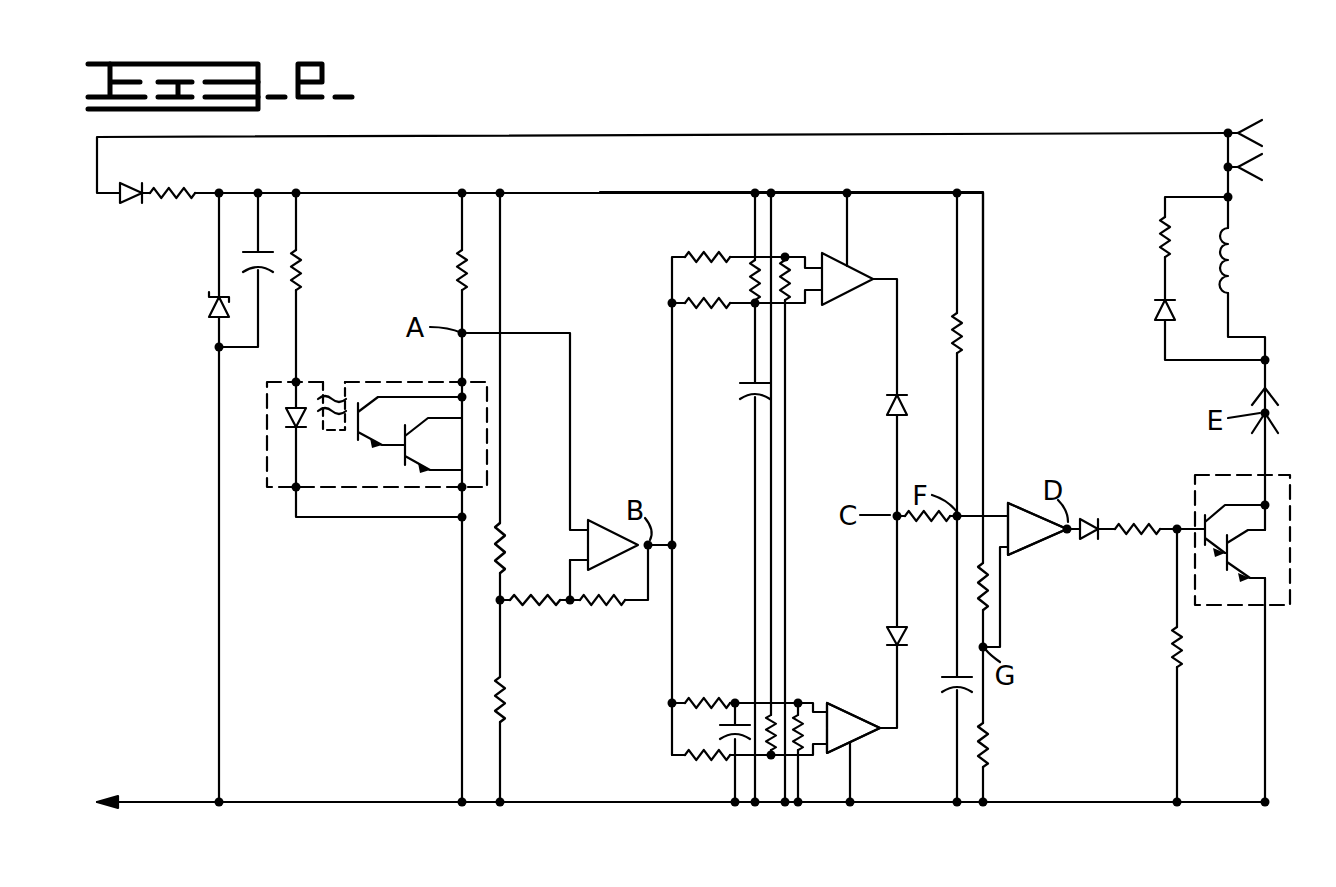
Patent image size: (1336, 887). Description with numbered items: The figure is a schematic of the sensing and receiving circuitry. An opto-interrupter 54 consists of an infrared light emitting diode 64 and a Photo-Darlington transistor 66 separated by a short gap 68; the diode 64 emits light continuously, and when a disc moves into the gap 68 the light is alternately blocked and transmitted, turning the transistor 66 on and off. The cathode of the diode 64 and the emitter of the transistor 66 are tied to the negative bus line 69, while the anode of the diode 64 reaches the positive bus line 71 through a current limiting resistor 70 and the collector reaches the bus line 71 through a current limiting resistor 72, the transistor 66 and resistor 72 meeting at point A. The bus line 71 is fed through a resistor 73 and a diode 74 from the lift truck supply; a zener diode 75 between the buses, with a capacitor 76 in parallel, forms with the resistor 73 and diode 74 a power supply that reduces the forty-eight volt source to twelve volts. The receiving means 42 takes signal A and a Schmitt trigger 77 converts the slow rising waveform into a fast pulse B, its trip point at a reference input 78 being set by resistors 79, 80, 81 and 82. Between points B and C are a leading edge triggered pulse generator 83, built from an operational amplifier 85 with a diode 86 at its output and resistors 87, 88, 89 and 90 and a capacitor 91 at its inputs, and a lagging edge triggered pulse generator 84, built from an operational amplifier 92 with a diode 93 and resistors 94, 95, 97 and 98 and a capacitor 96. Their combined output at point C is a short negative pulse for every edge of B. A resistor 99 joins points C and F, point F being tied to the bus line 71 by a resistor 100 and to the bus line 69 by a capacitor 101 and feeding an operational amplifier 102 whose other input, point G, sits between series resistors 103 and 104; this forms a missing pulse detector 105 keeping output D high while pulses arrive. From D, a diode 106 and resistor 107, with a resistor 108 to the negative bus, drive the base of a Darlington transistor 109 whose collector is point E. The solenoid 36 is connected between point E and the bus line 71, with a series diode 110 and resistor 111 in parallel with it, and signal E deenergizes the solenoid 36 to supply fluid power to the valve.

The solenoid 36 is at (1236, 270).
The receiving means 42 is at (968, 172).
The opto-interrupter 54 is at (270, 490).
The infrared light emitting diode 64 is at (285, 413).
The Photo-Darlington transistor 66 is at (360, 403).
The gap 68 is at (337, 378).
The negative bus line 69 is at (358, 800).
The current limiting resistor 70 is at (300, 275).
The positive bus line 71 is at (375, 197).
The current limiting resistor 72 is at (460, 270).
The resistor 73 is at (188, 190).
The diode 74 is at (120, 205).
The zener diode 75 is at (208, 305).
The capacitor 76 is at (270, 252).
The Schmitt trigger 77 is at (600, 520).
The reference input 78 is at (570, 562).
The resistor 79 is at (605, 603).
The resistor 80 is at (535, 603).
The resistor 81 is at (505, 540).
The resistor 82 is at (505, 702).
The leading edge triggered pulse generator 83 is at (680, 172).
The lagging edge triggered pulse generator 84 is at (716, 770).
The operational amplifier 85 is at (858, 268).
The diode 86 is at (885, 407).
The resistor 87 is at (788, 265).
The resistor 88 is at (708, 254).
The resistor 89 is at (748, 280).
The resistor 90 is at (710, 306).
The capacitor 91 is at (742, 385).
The operational amplifier 92 is at (855, 740).
The diode 93 is at (890, 632).
The resistor 94 is at (805, 715).
The resistor 95 is at (705, 700).
The capacitor 96 is at (738, 720).
The resistor 97 is at (773, 715).
The resistor 98 is at (705, 758).
The resistor 99 is at (928, 525).
The resistor 100 is at (955, 335).
The capacitor 101 is at (950, 690).
The operational amplifier 102 is at (1025, 510).
The resistor 103 is at (988, 590).
The resistor 104 is at (990, 745).
The missing pulse detector 105 is at (1048, 655).
The diode 106 is at (1090, 540).
The resistor 107 is at (1150, 525).
The resistor 108 is at (1182, 650).
The Darlington transistor 109 is at (1200, 473).
The diode 110 is at (1155, 313).
The resistor 111 is at (1160, 239).